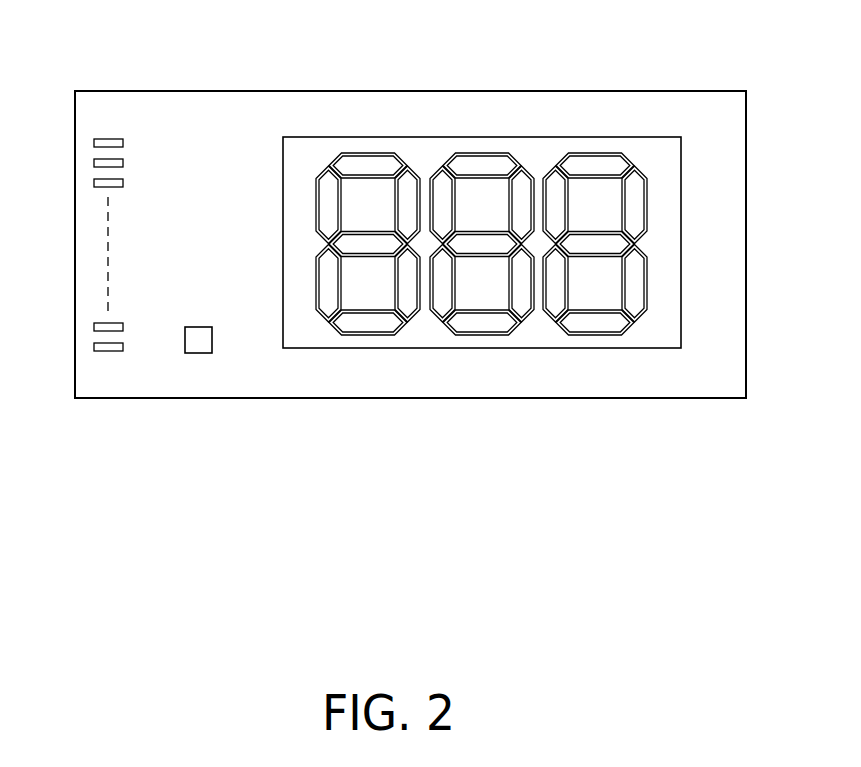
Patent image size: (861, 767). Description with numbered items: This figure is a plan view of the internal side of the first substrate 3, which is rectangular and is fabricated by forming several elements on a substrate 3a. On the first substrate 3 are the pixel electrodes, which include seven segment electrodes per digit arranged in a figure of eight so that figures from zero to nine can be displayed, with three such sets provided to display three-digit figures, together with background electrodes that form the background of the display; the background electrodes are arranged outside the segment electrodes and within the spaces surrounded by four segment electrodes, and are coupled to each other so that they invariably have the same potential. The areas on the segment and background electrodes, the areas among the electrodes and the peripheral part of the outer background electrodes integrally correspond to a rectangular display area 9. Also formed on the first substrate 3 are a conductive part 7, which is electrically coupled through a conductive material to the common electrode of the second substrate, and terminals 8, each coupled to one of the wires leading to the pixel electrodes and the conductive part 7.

The first substrate 3 is at (625, 90).
The substrate 3a is at (193, 112).
The conductive part 7 is at (202, 344).
The terminal 8 is at (100, 143).
The display area 9 is at (343, 136).